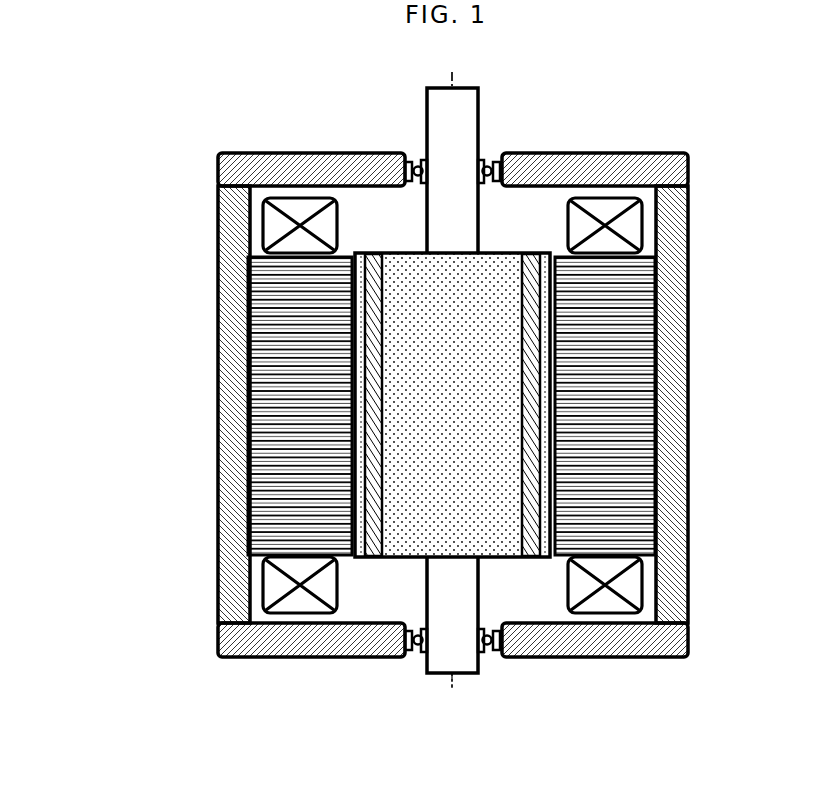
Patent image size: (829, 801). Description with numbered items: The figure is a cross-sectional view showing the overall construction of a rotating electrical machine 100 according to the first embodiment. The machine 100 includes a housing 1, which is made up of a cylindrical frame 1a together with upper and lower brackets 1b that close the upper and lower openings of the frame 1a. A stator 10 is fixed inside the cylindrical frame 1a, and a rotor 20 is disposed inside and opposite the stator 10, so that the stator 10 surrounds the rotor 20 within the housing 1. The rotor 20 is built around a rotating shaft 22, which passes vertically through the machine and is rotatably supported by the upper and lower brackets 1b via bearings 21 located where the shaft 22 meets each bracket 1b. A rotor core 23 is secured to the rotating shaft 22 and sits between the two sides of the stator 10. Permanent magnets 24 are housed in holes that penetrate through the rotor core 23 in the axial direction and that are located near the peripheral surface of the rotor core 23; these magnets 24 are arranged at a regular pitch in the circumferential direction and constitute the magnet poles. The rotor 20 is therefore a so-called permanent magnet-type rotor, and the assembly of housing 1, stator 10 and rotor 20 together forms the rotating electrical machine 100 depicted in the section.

The rotating electrical machine 100 is at (222, 123).
The housing 1 is at (147, 157).
The cylindrical frame 1a is at (228, 233).
The upper and lower brackets 1b is at (235, 167).
The stator 10 is at (265, 373).
The rotor 20 is at (401, 245).
The bearings 21 is at (487, 157).
The rotating shaft 22 is at (478, 112).
The rotor core 23 is at (502, 253).
The permanent magnets 24 is at (533, 252).